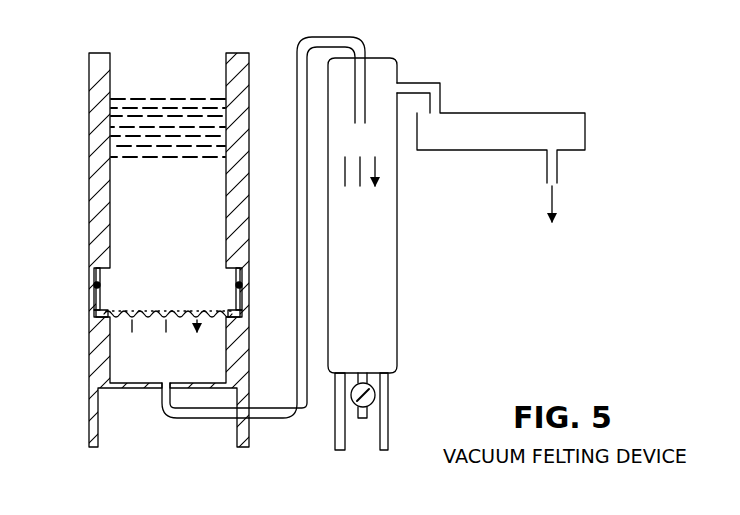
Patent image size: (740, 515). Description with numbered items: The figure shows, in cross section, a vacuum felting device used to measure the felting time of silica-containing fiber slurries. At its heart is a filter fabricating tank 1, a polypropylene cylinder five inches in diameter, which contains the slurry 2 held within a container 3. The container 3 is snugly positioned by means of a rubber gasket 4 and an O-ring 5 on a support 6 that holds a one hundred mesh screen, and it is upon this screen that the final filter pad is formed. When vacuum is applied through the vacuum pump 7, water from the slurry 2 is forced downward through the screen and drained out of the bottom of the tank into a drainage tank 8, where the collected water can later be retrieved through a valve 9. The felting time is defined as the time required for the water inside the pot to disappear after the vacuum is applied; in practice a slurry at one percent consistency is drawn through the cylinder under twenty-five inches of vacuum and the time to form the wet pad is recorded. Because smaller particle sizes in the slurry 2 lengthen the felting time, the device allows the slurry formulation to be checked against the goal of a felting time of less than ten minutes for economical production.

The filter fabricating tank 1 is at (137, 63).
The slurry 2 is at (118, 131).
The container 3 is at (172, 223).
The rubber gasket 4 is at (91, 271).
The O-ring 5 is at (97, 286).
The support 6 is at (105, 313).
The vacuum pump 7 is at (491, 170).
The drainage tank 8 is at (371, 253).
The valve 9 is at (363, 426).